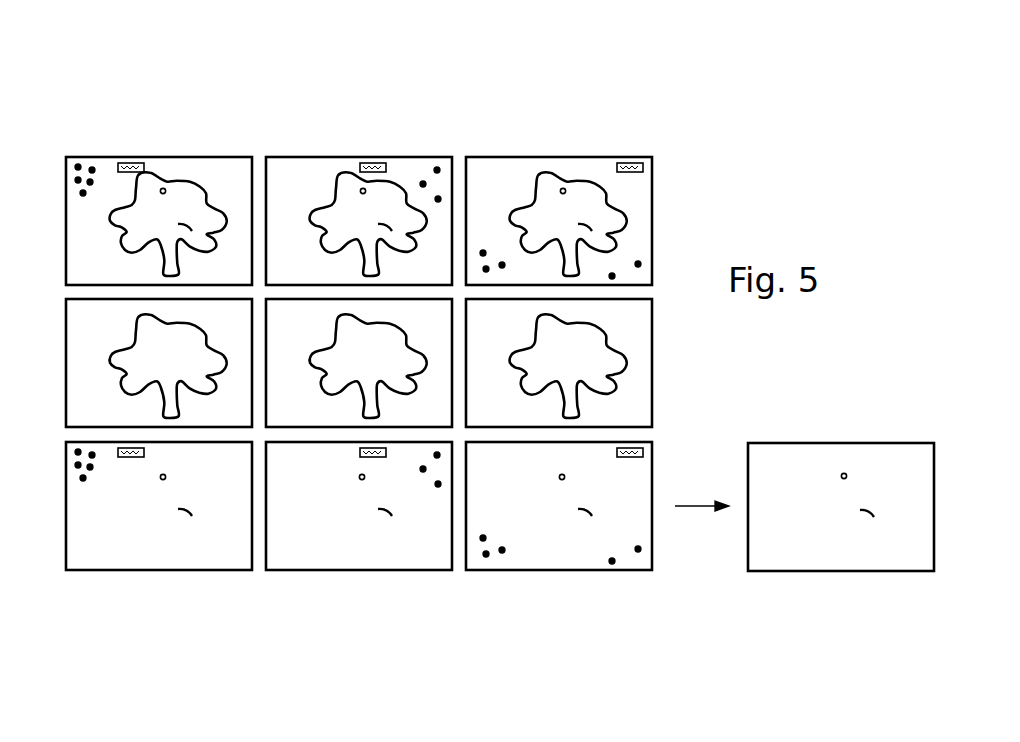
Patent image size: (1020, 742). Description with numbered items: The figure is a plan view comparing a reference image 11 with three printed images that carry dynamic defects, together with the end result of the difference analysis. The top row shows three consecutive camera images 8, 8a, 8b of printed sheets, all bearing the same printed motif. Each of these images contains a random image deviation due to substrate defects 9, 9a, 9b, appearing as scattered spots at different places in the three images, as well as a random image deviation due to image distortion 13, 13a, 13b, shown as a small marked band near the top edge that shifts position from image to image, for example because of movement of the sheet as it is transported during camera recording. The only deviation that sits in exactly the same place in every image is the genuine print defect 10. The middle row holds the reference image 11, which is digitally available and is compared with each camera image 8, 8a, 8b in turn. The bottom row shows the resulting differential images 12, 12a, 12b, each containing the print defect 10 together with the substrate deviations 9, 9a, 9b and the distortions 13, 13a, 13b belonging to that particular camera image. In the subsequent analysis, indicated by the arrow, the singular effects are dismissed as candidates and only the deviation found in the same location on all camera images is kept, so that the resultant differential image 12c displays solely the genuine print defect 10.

The camera image 8 is at (206, 157).
The consecutive camera image 8a is at (316, 157).
The consecutive camera image 8b is at (610, 157).
The random image deviation due to substrate defects 9 is at (78, 166).
The continuous substrate defect 9a is at (436, 169).
The continuous substrate defect 9b is at (483, 252).
The genuine print defect 10 is at (163, 188).
The reference image 11 is at (66, 373).
The differential image 12 is at (195, 572).
The consecutive differential image 12a is at (320, 572).
The consecutive differential image 12b is at (590, 572).
The resultant differential image 12c is at (884, 443).
The random image deviation due to image distortion 13 is at (130, 163).
The consecutive image distortion 13a is at (369, 163).
The consecutive image distortion 13b is at (635, 163).